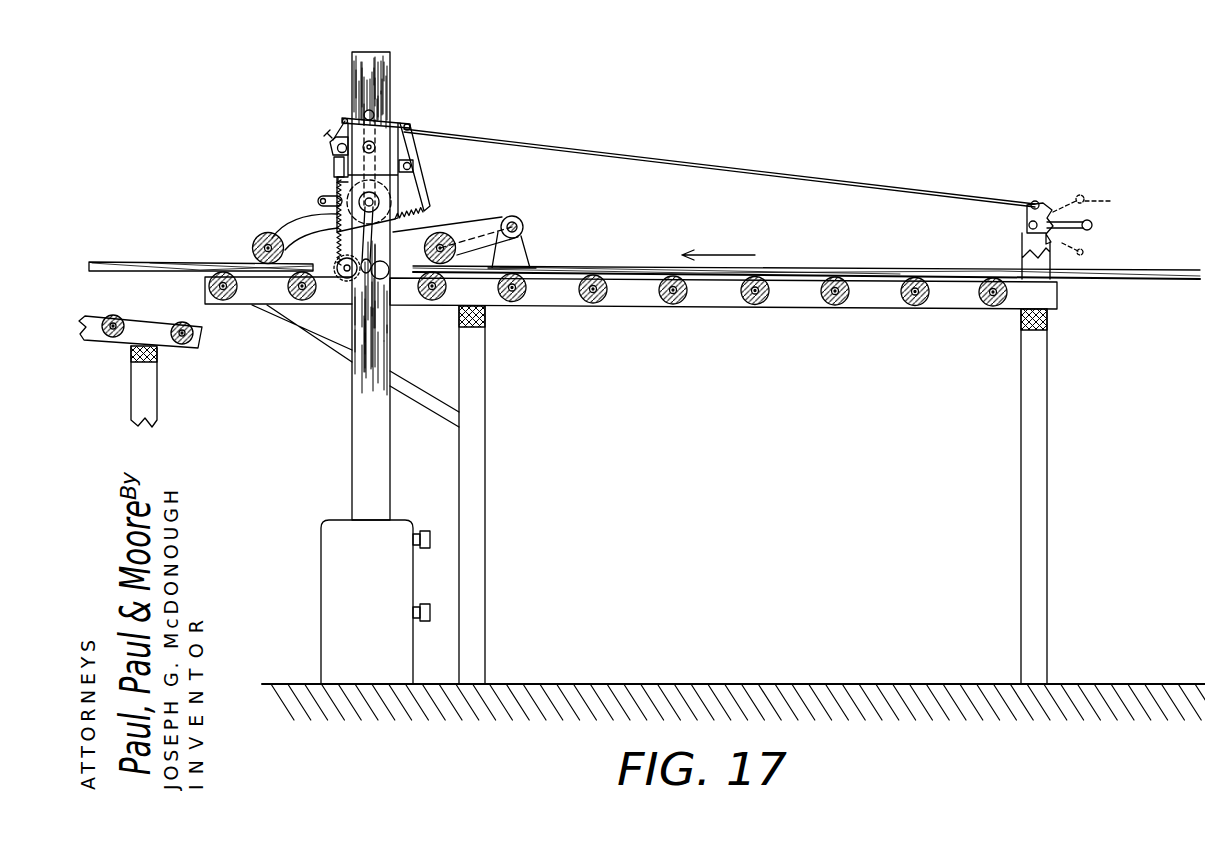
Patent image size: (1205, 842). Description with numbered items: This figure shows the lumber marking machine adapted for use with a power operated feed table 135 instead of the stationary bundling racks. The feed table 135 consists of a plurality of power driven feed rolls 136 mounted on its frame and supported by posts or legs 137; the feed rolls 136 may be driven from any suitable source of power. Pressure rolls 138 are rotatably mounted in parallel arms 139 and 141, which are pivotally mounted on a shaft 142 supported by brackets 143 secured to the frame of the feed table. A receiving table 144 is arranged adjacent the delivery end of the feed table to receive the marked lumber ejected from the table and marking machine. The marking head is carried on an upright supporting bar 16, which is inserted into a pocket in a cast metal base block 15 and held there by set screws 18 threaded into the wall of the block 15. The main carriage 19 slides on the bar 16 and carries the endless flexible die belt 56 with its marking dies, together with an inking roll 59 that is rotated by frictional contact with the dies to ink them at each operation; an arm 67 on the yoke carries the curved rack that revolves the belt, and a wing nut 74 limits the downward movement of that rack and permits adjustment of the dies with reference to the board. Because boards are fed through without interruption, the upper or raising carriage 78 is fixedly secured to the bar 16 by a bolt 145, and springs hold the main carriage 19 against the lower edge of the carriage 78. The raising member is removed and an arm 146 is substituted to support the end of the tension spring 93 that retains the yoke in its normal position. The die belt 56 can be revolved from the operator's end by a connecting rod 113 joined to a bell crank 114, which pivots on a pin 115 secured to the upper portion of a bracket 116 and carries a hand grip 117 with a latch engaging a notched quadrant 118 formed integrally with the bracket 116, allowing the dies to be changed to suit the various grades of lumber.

The base block 15 is at (332, 577).
The upright supporting bar 16 is at (365, 430).
The set screws 18 is at (426, 530).
The main carriage 19 is at (424, 182).
The die belt 56 is at (393, 255).
The inking roll 59 is at (344, 260).
The arm 67 is at (332, 196).
The wing nut 74 is at (328, 140).
The raising carriage 78 is at (350, 160).
The tension spring 93 is at (426, 194).
The connecting rod 113 is at (714, 167).
The bell crank 114 is at (1031, 208).
The pin 115 is at (1029, 227).
The bracket 116 is at (1050, 260).
The hand grip 117 is at (1091, 223).
The notched quadrant 118 is at (1043, 211).
The power operated feed table 135 is at (765, 307).
The feed rolls 136 is at (224, 298).
The posts or legs 137 is at (486, 396).
The pressure rolls 138 is at (255, 244).
The parallel arm 139 is at (286, 228).
The parallel arm 141 is at (482, 223).
The shaft 142 is at (524, 223).
The brackets 143 is at (531, 249).
The receiving table 144 is at (133, 333).
The bolt 145 is at (372, 146).
The arm 146 is at (428, 187).